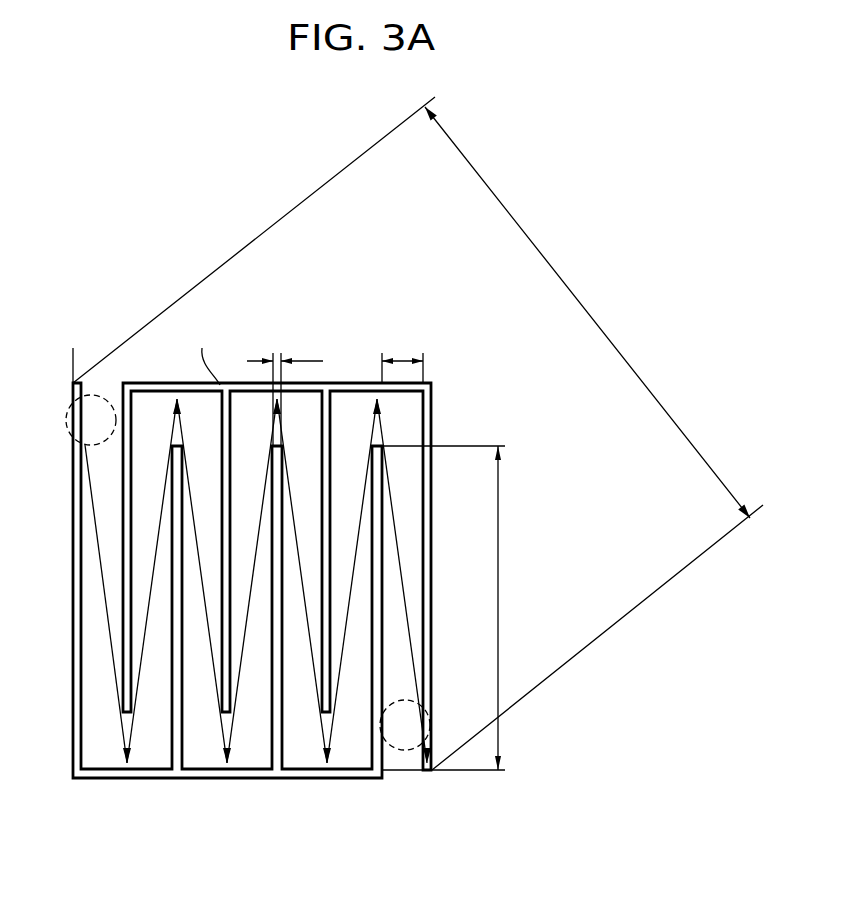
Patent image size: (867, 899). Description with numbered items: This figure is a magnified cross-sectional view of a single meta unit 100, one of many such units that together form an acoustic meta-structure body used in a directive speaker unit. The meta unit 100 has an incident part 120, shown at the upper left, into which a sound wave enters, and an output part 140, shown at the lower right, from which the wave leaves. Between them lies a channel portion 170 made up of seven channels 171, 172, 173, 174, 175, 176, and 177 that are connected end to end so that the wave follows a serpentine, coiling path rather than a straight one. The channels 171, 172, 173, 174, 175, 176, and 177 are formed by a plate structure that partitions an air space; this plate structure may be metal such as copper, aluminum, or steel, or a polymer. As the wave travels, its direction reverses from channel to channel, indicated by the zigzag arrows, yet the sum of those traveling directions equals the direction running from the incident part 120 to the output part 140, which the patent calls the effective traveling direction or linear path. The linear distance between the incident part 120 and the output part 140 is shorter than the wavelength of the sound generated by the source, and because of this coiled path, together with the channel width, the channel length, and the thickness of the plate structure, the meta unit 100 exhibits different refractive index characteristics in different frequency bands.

The meta unit 100 is at (490, 360).
The incident part 120 is at (93, 395).
The output part 140 is at (433, 723).
The channel portion 170 is at (263, 633).
The first channel 171 is at (100, 693).
The second channel 172 is at (153, 693).
The third channel 173 is at (203, 700).
The fourth channel 174 is at (258, 700).
The fifth channel 175 is at (303, 702).
The sixth channel 176 is at (358, 702).
The seventh channel 177 is at (417, 610).